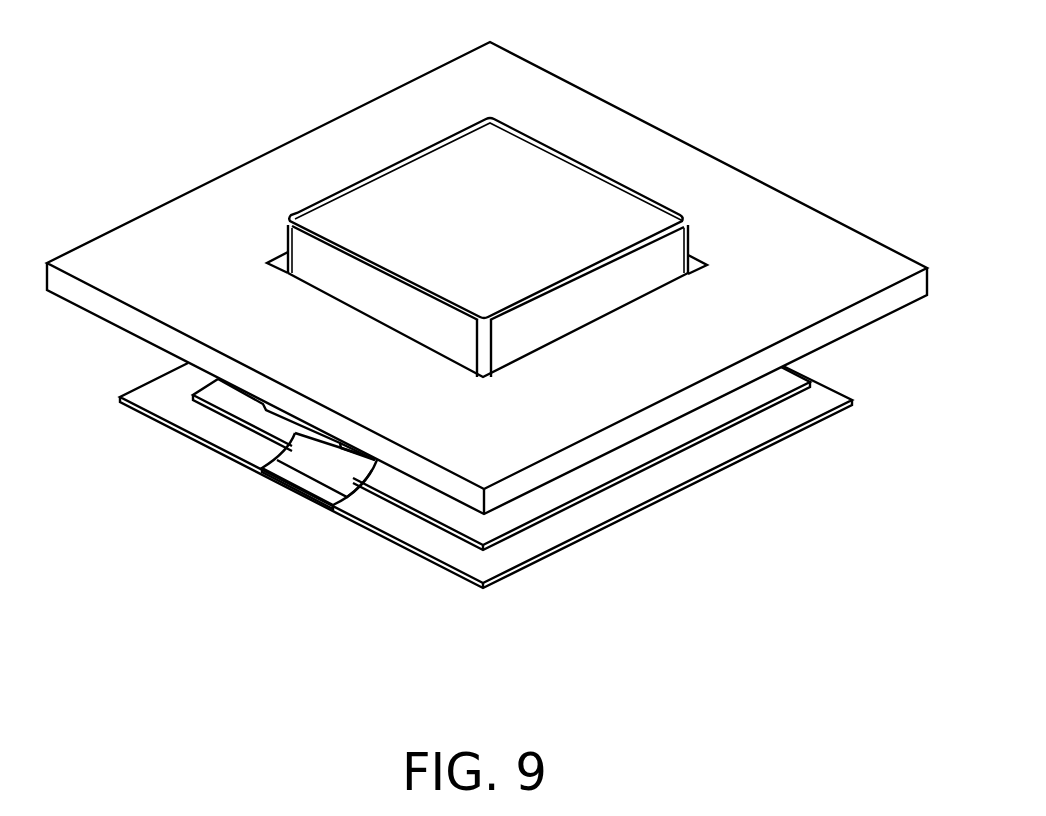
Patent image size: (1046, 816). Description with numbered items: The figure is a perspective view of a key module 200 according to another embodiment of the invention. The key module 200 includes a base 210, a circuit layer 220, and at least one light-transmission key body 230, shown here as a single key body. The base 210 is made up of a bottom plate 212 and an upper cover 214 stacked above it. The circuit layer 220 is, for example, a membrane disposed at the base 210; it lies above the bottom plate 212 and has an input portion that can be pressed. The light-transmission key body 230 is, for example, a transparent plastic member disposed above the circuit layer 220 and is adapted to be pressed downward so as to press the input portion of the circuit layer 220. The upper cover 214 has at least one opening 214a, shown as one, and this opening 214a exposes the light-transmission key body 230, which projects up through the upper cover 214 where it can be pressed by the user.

The key module 200 is at (920, 737).
The base 210 is at (952, 497).
The bottom plate 212 is at (802, 413).
The upper cover 214 is at (499, 278).
The opening 214a is at (337, 303).
The circuit layer 220 is at (628, 457).
The light-transmission key body 230 is at (463, 198).